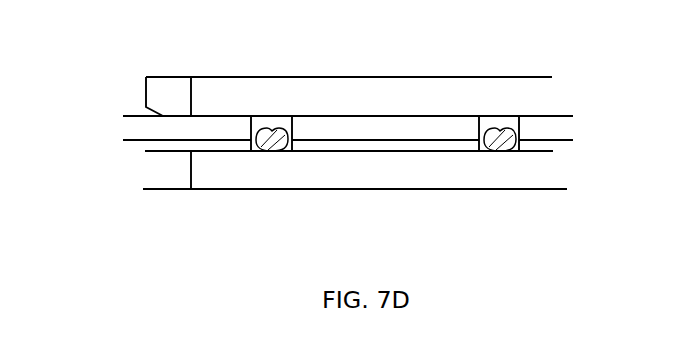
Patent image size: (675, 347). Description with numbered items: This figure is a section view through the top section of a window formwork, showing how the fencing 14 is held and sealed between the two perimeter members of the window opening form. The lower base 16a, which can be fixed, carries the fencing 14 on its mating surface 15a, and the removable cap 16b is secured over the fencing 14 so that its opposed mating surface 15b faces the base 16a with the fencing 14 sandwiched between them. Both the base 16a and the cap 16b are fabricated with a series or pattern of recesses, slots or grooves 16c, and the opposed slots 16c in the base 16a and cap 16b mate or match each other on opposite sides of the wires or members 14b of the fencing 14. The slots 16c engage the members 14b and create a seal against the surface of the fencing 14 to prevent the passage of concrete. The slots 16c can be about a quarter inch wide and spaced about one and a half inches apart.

The fencing 14 is at (125, 140).
The wires or members of the fencing 14b is at (268, 152).
The mating surface of the base 15a is at (415, 140).
The mating surface of the cap 15b is at (433, 138).
The base or first perimeter member 16a is at (200, 190).
The cap or second perimeter member 16b is at (168, 77).
The slots or grooves 16c is at (273, 120).